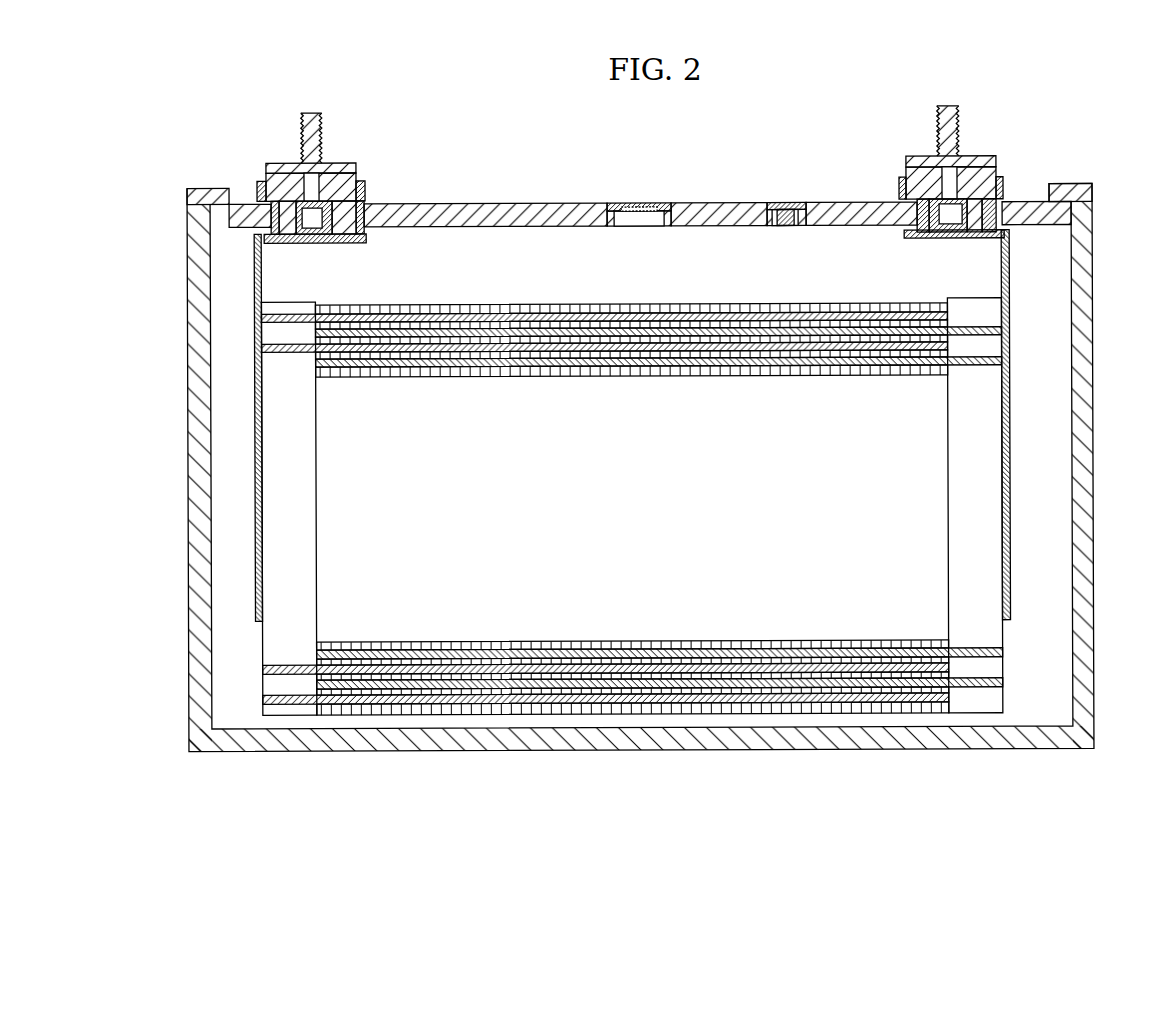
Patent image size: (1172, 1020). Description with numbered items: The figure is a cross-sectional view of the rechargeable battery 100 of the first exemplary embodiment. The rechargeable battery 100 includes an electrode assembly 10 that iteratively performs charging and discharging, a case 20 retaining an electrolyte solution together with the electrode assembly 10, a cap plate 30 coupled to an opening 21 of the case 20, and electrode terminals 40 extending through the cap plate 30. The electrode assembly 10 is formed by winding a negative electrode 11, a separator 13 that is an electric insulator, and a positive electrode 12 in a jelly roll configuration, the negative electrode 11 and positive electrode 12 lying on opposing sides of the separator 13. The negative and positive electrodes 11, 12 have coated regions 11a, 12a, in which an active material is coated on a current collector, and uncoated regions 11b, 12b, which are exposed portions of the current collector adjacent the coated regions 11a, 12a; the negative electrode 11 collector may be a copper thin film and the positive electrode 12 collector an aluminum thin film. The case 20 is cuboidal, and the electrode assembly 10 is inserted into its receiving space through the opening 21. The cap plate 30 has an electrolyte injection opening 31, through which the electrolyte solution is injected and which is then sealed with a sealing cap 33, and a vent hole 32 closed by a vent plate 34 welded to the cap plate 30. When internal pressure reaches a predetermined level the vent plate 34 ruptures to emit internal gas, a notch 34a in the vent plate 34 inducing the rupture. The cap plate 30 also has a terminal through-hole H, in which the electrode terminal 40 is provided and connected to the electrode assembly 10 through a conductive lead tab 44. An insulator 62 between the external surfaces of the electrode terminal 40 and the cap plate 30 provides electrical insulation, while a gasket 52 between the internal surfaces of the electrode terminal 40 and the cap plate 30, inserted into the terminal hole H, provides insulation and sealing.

The rechargeable battery 100 is at (636, 135).
The electrode assembly 10 is at (632, 563).
The negative electrode 11 is at (605, 570).
The coated region 11a is at (287, 790).
The uncoated region 11b is at (309, 706).
The positive electrode 12 is at (660, 577).
The coated region 12a is at (1000, 790).
The uncoated region 12b is at (960, 703).
The separator 13 is at (610, 706).
The case 20 is at (1093, 473).
The opening 21 is at (222, 200).
The cap plate 30 is at (715, 218).
The electrolyte injection opening 31 is at (770, 206).
The vent hole 32 is at (622, 219).
The sealing cap 33 is at (788, 206).
The vent plate 34 is at (655, 205).
The notch 34a is at (630, 207).
The electrode terminal 40 is at (913, 140).
The lead tab 44 is at (1010, 545).
The gasket 52 is at (1003, 232).
The insulator 62 is at (1004, 178).
The terminal through-hole H is at (970, 208).